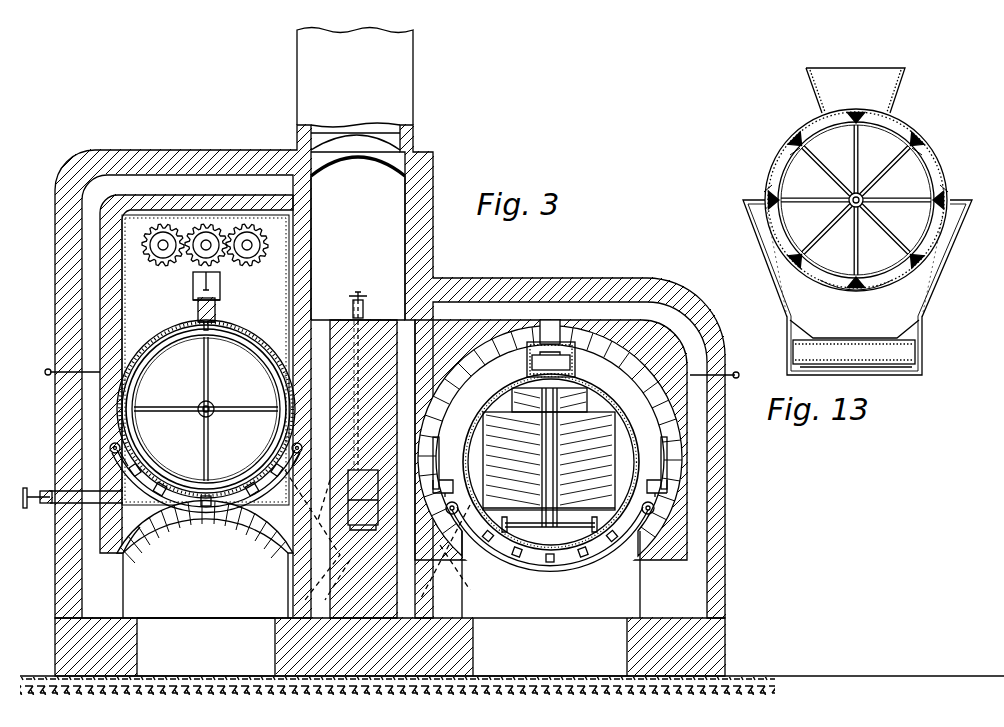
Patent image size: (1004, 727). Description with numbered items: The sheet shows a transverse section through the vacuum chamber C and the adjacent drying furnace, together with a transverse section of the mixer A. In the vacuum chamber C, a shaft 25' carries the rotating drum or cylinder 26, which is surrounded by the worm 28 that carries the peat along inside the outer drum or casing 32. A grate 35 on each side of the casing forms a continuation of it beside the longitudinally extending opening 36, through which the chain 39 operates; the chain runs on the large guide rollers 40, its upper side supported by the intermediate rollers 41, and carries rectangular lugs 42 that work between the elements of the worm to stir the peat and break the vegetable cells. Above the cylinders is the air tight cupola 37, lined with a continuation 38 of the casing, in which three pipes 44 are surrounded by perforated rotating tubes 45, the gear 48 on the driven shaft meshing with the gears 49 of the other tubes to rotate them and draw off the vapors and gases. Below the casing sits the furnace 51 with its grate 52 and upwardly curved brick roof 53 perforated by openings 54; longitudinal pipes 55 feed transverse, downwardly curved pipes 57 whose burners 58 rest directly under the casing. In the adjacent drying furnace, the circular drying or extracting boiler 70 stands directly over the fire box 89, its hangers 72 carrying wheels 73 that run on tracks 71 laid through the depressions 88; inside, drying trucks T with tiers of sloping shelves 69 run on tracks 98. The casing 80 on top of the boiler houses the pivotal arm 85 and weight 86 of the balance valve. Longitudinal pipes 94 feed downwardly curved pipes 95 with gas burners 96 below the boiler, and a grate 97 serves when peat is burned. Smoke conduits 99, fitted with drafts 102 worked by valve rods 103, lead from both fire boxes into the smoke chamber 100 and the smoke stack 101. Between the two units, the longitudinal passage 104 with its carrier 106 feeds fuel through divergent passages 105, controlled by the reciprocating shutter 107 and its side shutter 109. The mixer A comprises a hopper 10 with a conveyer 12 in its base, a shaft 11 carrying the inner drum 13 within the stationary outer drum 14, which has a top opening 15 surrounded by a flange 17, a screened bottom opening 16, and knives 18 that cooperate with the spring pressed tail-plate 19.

In FIG. 13, the hopper 10 is at (930, 305).
In FIG. 13, the longitudinally extending shaft 11 is at (850, 220).
In FIG. 13, the conveyer 12 is at (890, 364).
In FIG. 13, the inner drum 13 is at (780, 190).
In FIG. 13, the outer drum 14 is at (945, 150).
In FIG. 13, the opening 15 is at (878, 100).
In FIG. 13, the screened opening 16 is at (878, 288).
In FIG. 13, the flange 17 is at (902, 92).
In FIG. 13, the knives 18 is at (946, 163).
In FIG. 13, the spring pressed tail-plate 19 is at (912, 262).
In FIG. 13, the mixer A is at (867, 261).
In FIG. 3, the vacuum chamber C is at (163, 371).
In FIG. 3, the drying trucks T is at (612, 420).
In FIG. 3, the shaft 25' is at (220, 395).
In FIG. 3, the drum or cylinder 26 is at (224, 337).
In FIG. 3, the worm 28 is at (206, 409).
In FIG. 3, the outer drum or casing 32 is at (117, 422).
In FIG. 3, the grate 35 is at (176, 320).
In FIG. 3, the longitudinally extending opening 36 is at (200, 347).
In FIG. 3, the cupola 37 is at (390, 483).
In FIG. 3, the lining 38 is at (122, 262).
In FIG. 3, the chain 39 is at (220, 280).
In FIG. 3, the guide rollers 40 is at (198, 312).
In FIG. 3, the intermediate rollers 41 is at (220, 294).
In FIG. 3, the lugs 42 is at (216, 312).
In FIG. 3, the pipes 44 is at (262, 260).
In FIG. 3, the tubes 45 is at (258, 245).
In FIG. 3, the gear 48 is at (203, 240).
In FIG. 3, the gears 49 is at (168, 270).
In FIG. 3, the furnace 51 is at (205, 585).
In FIG. 3, the grate 52 is at (222, 622).
In FIG. 3, the brick roof 53 is at (140, 535).
In FIG. 3, the openings 54 is at (208, 507).
In FIG. 3, the longitudinal pipes 55 is at (300, 453).
In FIG. 3, the transverse pipes 57 is at (125, 478).
In FIG. 3, the burners 58 is at (250, 480).
In FIG. 3, the sloping shelves 69 is at (628, 438).
In FIG. 3, the drying or extracting boiler 70 is at (600, 400).
In FIG. 3, the tracks 71 is at (668, 482).
In FIG. 3, the hangers 72 is at (583, 560).
In FIG. 3, the wheels 73 is at (660, 456).
In FIG. 3, the casing or chamber 80 is at (527, 360).
In FIG. 3, the pivotal arm 85 is at (562, 340).
In FIG. 3, the weight 86 is at (572, 362).
In FIG. 3, the depression 88 is at (668, 488).
In FIG. 3, the furnace 89 is at (580, 565).
In FIG. 3, the pipes 94 is at (650, 516).
In FIG. 3, the downwardly curved pipes 95 is at (550, 563).
In FIG. 3, the gas burners 96 is at (615, 545).
In FIG. 3, the grate 97 is at (554, 625).
In FIG. 3, the tracks 98 is at (600, 550).
In FIG. 3, the smoke conduits 99 is at (700, 448).
In FIG. 3, the smoke chamber 100 is at (358, 226).
In FIG. 3, the smoke stack 101 is at (405, 90).
In FIG. 3, the drafts 102 is at (736, 370).
In FIG. 3, the valve rods 103 is at (364, 306).
In FIG. 3, the longitudinal passage 104 is at (363, 497).
In FIG. 3, the divergent passages 105 is at (285, 565).
In FIG. 3, the carrier 106 is at (363, 514).
In FIG. 3, the shutter 107 is at (369, 385).
In FIG. 3, the side shutter 109 is at (319, 580).